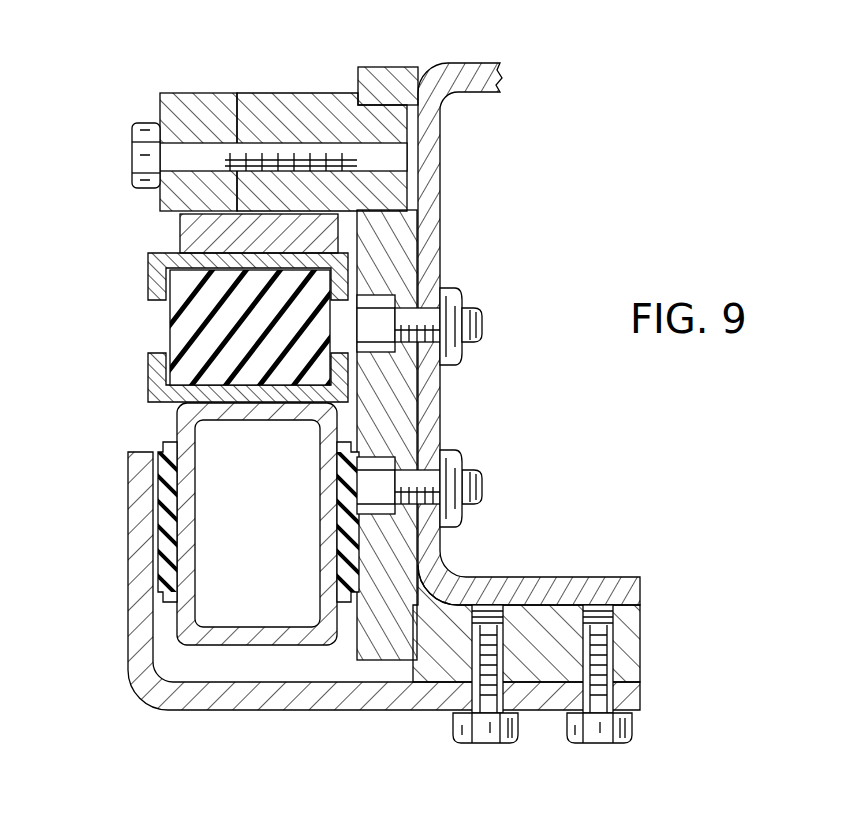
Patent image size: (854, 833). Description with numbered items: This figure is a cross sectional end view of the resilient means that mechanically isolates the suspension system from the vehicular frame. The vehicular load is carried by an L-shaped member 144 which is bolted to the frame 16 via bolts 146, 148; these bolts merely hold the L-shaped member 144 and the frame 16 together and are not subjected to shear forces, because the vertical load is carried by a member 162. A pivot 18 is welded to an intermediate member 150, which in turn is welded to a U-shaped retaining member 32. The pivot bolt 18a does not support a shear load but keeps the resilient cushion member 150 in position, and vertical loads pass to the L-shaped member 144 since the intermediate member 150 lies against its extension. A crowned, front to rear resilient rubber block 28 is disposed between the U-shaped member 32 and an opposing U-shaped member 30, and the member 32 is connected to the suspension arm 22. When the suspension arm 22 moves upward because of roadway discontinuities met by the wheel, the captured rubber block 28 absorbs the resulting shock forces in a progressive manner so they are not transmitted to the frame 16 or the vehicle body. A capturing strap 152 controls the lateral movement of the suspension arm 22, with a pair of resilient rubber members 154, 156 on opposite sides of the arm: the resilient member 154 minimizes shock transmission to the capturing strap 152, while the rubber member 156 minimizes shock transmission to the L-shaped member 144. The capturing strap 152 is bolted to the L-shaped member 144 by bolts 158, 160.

The frame 16 is at (478, 70).
The pivot 18 is at (127, 115).
The pivot bolt 18a is at (132, 150).
The intermediate member 150 is at (180, 236).
The U-shaped retaining member 32 is at (150, 273).
The rubber block 28 is at (178, 322).
The U-shaped member 30 is at (150, 371).
The L-shaped member 144 is at (403, 229).
The bolt 146 is at (452, 313).
The bolt 148 is at (455, 463).
The rubber member 156 is at (458, 528).
The suspension member 22 is at (188, 483).
The resilient member 154 is at (160, 463).
The capturing strap 152 is at (133, 533).
The member 162 is at (633, 632).
The bolt 158 is at (487, 745).
The bolt 160 is at (628, 722).